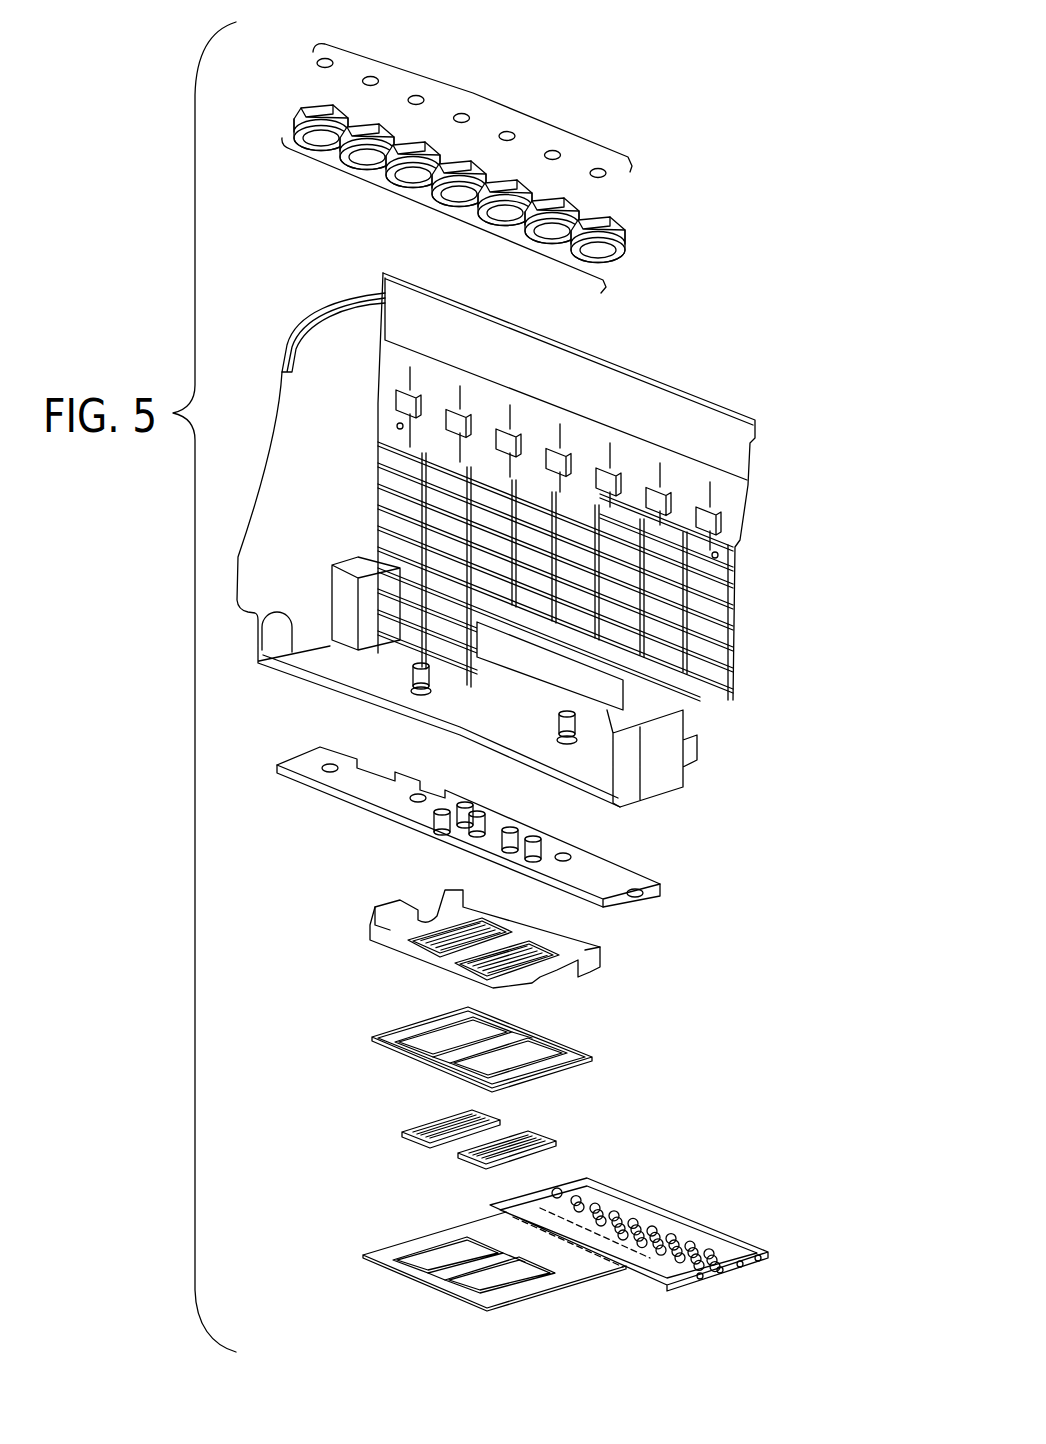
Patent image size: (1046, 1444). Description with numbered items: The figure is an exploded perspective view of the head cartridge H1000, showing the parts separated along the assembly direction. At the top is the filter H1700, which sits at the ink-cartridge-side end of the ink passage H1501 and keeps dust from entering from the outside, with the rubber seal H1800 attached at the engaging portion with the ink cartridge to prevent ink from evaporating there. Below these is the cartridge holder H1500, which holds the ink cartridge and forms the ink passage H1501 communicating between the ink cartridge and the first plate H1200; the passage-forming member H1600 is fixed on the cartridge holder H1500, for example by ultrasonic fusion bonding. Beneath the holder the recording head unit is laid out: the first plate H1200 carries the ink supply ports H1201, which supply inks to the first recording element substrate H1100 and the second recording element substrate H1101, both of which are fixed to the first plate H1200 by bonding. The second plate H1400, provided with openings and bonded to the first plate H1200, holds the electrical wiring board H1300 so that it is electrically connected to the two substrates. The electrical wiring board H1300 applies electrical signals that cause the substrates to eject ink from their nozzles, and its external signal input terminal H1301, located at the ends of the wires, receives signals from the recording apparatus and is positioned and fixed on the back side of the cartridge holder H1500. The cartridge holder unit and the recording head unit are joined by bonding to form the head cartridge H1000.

The head cartridge H1000 is at (548, 568).
The filter H1700 is at (476, 93).
The rubber seal H1800 is at (450, 229).
The cartridge holder H1500 is at (730, 625).
The ink passage H1501 is at (667, 790).
The passage-forming member H1600 is at (360, 795).
The first plate H1200 is at (387, 940).
The ink supply port H1201 is at (517, 963).
The second plate H1400 is at (440, 1060).
The first recording element substrate H1100 is at (525, 1158).
The second recording element substrate H1101 is at (417, 1143).
The electrical wiring board H1300 is at (437, 1282).
The external signal input terminal H1301 is at (698, 1267).